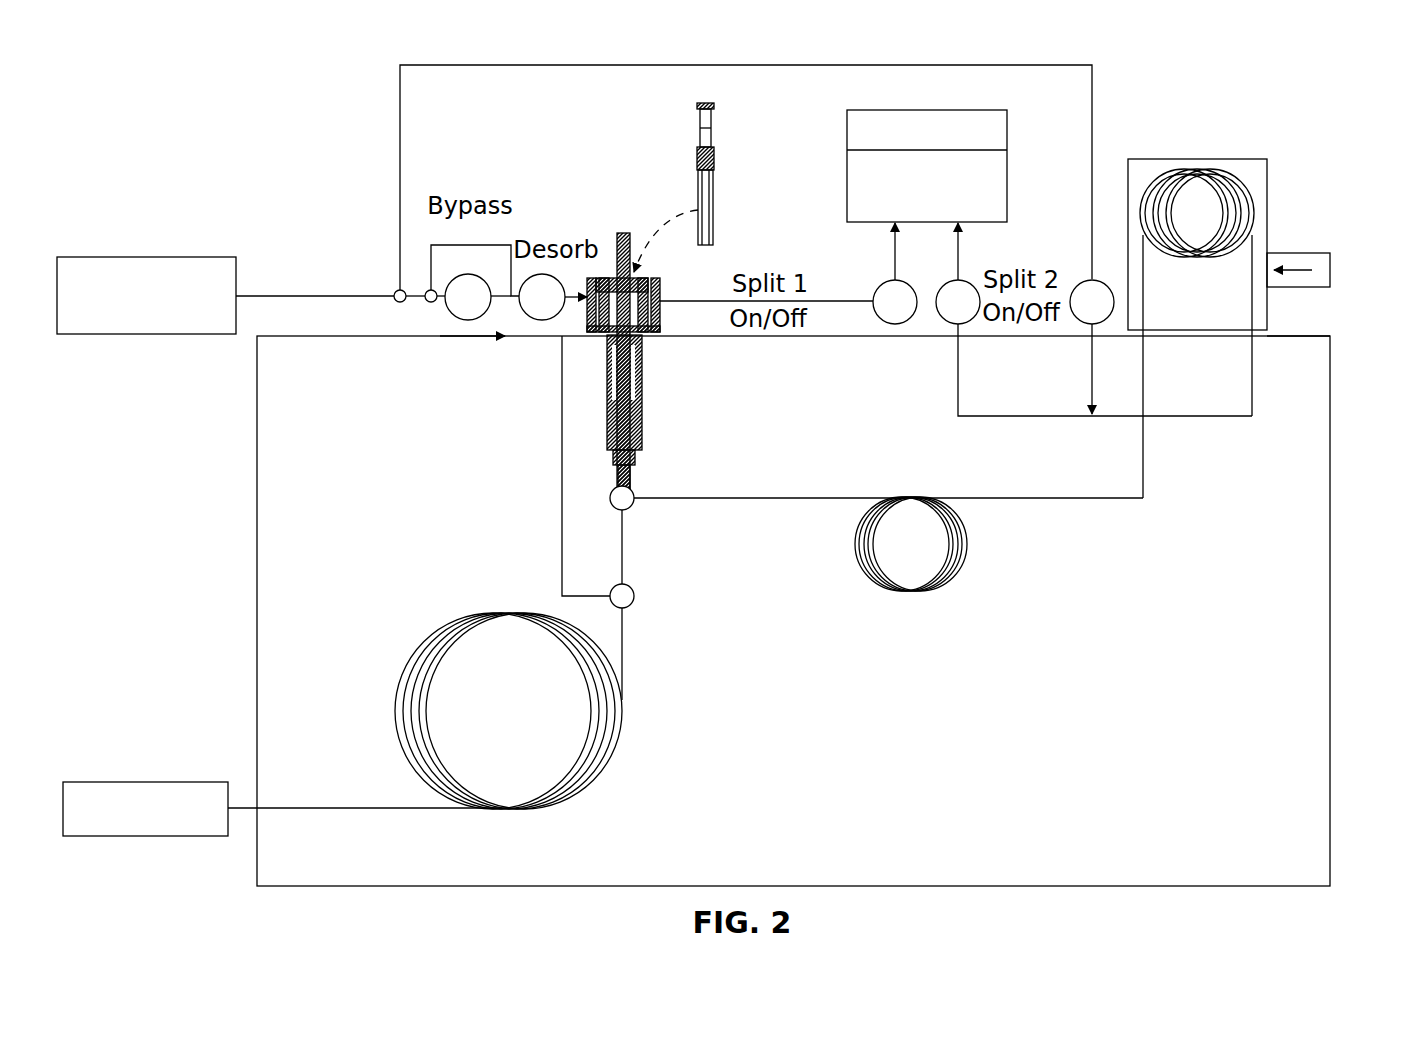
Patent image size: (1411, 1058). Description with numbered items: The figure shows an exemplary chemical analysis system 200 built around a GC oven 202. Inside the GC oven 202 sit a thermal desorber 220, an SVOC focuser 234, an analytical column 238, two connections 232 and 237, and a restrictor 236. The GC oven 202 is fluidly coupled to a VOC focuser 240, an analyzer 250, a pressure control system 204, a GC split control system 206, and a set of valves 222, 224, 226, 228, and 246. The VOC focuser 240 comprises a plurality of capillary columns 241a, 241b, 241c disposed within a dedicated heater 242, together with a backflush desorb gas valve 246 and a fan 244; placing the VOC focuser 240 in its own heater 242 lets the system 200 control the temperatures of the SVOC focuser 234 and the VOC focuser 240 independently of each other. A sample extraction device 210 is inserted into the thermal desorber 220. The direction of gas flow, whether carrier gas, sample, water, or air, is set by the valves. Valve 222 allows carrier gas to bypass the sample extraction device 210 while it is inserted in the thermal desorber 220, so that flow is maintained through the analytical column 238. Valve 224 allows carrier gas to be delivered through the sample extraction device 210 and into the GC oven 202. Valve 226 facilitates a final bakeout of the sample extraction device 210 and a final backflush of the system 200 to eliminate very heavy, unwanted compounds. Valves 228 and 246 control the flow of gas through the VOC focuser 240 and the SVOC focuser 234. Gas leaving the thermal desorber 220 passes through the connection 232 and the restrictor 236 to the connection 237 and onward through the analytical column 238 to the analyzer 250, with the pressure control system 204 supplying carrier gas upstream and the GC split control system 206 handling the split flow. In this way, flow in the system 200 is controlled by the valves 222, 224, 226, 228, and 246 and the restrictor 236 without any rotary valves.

The chemical analysis system 200 is at (203, 106).
The GC oven 202 is at (360, 481).
The pressure control system 204 is at (122, 256).
The GC split control system 206 is at (912, 109).
The sample extraction device 210 is at (712, 186).
The thermal desorber 220 is at (644, 398).
The valve 222 is at (468, 320).
The valve 224 is at (540, 320).
The valve 226 is at (895, 324).
The valve 228 is at (962, 324).
The connection 232 is at (633, 490).
The SVOC focuser 234 is at (910, 594).
The restrictor 236 is at (625, 545).
The connection 237 is at (635, 600).
The analytical column 238 is at (613, 758).
The VOC focuser 240 is at (1200, 158).
The capillary column 241a is at (1150, 190).
The capillary column 241b is at (1232, 185).
The capillary column 241c is at (1252, 208).
The heater 242 is at (1178, 227).
The fan 244 is at (1332, 268).
The backflush desorb gas valve 246 is at (1096, 324).
The analyzer 250 is at (122, 780).